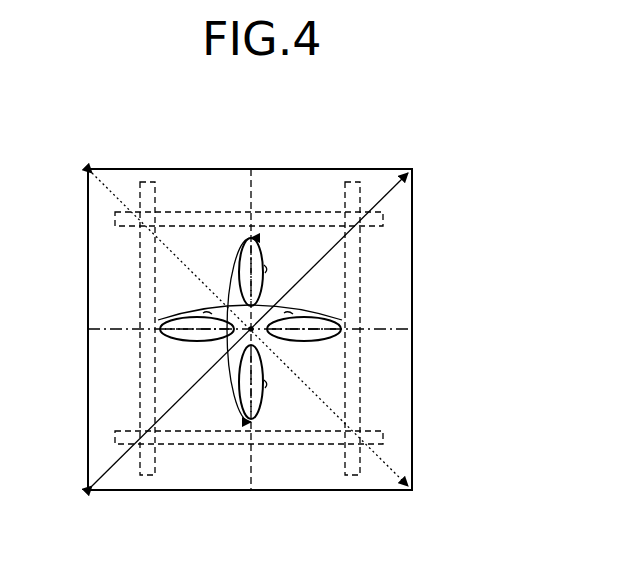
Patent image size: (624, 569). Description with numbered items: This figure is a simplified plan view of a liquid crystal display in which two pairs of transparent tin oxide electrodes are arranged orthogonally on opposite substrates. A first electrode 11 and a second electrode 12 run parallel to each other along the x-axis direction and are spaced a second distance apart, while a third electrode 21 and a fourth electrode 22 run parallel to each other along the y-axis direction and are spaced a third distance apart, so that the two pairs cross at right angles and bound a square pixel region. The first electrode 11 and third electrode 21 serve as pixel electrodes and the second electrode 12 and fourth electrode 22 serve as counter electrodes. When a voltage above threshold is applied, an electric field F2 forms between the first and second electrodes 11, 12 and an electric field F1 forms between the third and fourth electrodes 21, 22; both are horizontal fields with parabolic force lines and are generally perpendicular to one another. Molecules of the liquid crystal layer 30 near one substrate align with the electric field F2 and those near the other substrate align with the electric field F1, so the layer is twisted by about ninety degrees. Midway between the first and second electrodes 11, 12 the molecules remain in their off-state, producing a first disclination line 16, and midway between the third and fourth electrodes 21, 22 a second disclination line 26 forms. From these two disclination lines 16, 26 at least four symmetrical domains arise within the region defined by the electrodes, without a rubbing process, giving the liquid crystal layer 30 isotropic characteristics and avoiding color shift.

The first electrode 11 is at (385, 437).
The second electrode 12 is at (383, 220).
The first disclination line 16 is at (370, 329).
The third electrode 21 is at (147, 182).
The fourth electrode 22 is at (352, 182).
The second disclination line 26 is at (252, 478).
The liquid crystal layer 30 is at (335, 337).
The electric field F1 is at (205, 315).
The electric field F2 is at (266, 258).